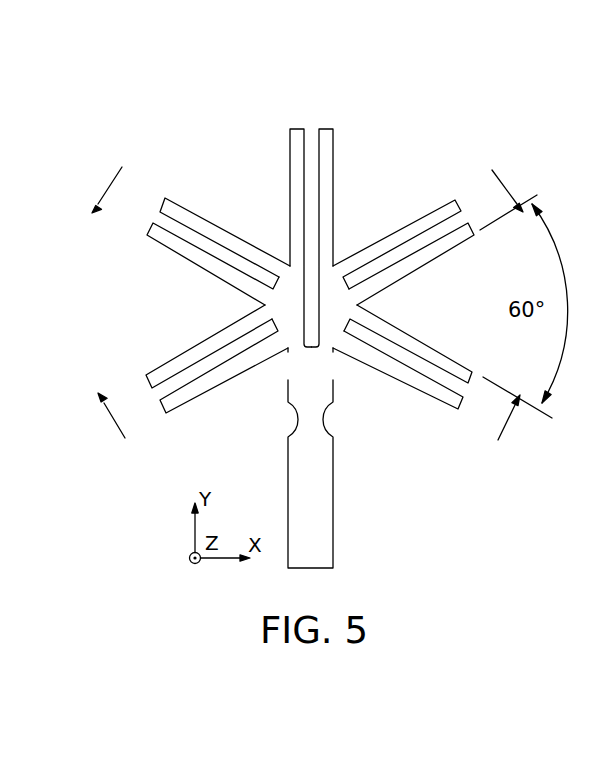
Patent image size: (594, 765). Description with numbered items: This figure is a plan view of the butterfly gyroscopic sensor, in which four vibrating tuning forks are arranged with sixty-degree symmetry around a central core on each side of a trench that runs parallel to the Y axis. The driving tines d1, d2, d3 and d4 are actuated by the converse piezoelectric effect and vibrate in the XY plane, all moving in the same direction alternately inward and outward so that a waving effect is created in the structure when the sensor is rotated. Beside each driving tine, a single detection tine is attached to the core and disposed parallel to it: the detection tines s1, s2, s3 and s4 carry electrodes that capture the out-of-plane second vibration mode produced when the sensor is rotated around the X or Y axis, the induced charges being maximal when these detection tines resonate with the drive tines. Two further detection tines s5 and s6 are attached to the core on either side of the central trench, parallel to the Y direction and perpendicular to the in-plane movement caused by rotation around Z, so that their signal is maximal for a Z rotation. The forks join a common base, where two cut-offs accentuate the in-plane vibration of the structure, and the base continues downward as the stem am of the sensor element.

The detection tine s1 is at (212, 228).
The driving tine d1 is at (196, 259).
The detection tine s2 is at (191, 352).
The driving tine d2 is at (214, 382).
The detection tine s3 is at (434, 264).
The driving tine d3 is at (411, 235).
The detection tine s4 is at (411, 384).
The driving tine d4 is at (433, 346).
The detection tine s5 is at (294, 225).
The detection tine s6 is at (328, 225).
The element base is at (310, 363).
The feed arm am is at (332, 474).